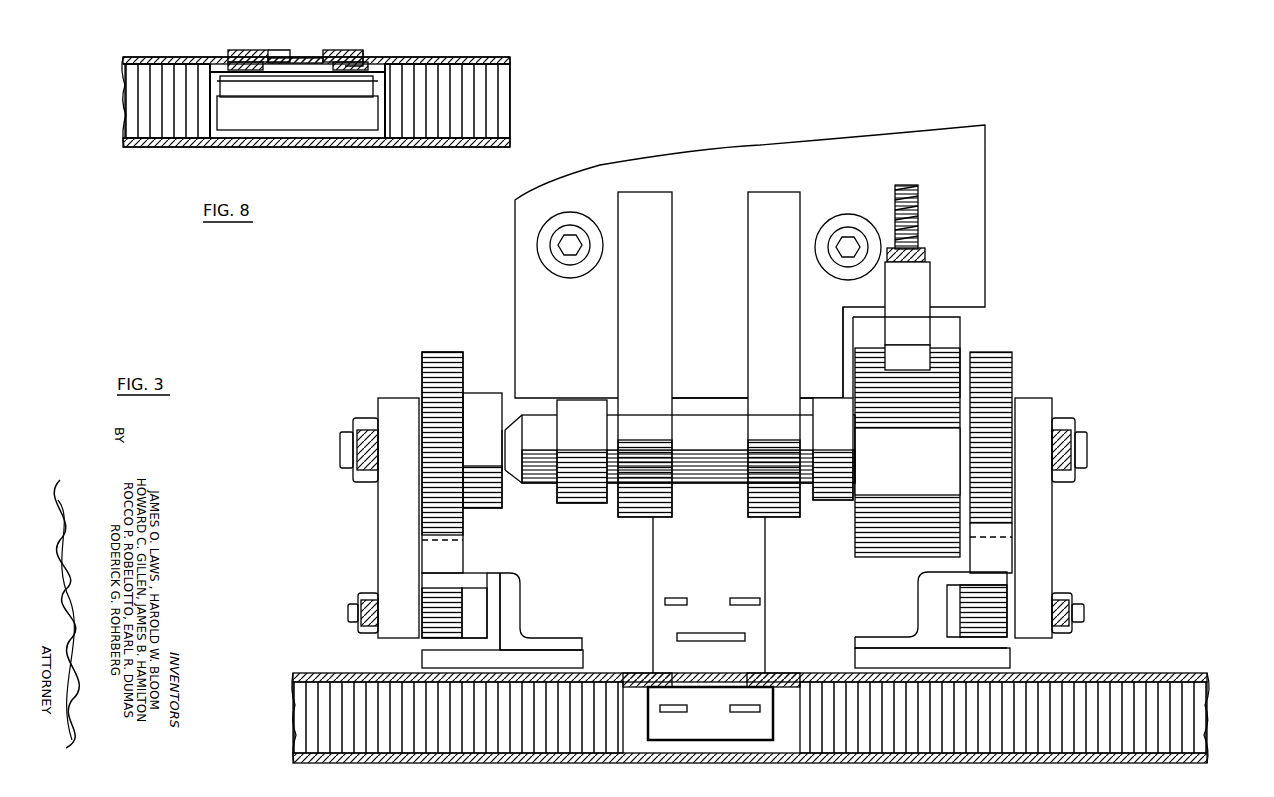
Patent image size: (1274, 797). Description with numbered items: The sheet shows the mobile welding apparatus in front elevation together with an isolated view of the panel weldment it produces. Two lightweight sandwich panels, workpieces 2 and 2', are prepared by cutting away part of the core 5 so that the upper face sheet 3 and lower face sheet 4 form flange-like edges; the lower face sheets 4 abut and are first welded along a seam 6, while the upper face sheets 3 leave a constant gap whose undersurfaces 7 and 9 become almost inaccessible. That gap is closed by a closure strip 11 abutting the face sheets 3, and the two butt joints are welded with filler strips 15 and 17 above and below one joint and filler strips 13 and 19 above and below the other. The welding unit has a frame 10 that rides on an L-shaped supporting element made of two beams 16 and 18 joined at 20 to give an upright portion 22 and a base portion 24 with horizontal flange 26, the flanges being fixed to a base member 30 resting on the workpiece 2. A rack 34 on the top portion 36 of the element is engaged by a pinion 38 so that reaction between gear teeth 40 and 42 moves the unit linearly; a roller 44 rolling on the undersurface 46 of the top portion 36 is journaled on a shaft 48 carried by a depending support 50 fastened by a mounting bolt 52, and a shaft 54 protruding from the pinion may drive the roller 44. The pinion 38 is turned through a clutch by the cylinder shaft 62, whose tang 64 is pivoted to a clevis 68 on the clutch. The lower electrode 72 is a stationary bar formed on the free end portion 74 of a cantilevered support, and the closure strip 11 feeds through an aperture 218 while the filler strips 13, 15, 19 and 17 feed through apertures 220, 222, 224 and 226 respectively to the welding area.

In FIG. 8, the workpiece 2 is at (290, 102).
In FIG. 3, the workpiece 2 is at (750, 701).
In FIG. 8, the workpiece 2' is at (536, 46).
In FIG. 8, the upper face sheet 3 is at (128, 57).
In FIG. 3, the upper face sheet 3 is at (1170, 672).
In FIG. 3, the lower face sheet 4 is at (1208, 758).
In FIG. 8, the core 5 is at (317, 101).
In FIG. 3, the core 5 is at (1200, 713).
In FIG. 3, the seam 6 is at (705, 757).
In FIG. 3, the undersurface of upper face sheet 7 is at (638, 688).
In FIG. 3, the undersurface of upper face sheet 9 is at (783, 688).
In FIG. 3, the frame 10 is at (518, 215).
In FIG. 8, the closure strip 11 is at (310, 58).
In FIG. 8, the filler strip 13 is at (360, 52).
In FIG. 8, the filler strip 15 is at (248, 54).
In FIG. 8, the filler strip 17 is at (228, 60).
In FIG. 8, the filler strip 19 is at (370, 60).
In FIG. 3, the beam 16 is at (497, 582).
In FIG. 3, the beam 18 is at (507, 586).
In FIG. 3, the joint between beams 20 is at (503, 612).
In FIG. 3, the upright portion 22 is at (520, 632).
In FIG. 3, the base portion 24 is at (860, 645).
In FIG. 3, the horizontal flange 26 is at (430, 645).
In FIG. 3, the base member 30 is at (860, 657).
In FIG. 3, the rack 34 is at (455, 548).
In FIG. 3, the top portion 36 is at (455, 582).
In FIG. 3, the pinion 38 is at (422, 368).
In FIG. 3, the gear teeth 40 is at (420, 543).
In FIG. 3, the gear teeth 42 is at (440, 358).
In FIG. 3, the roller 44 is at (445, 602).
In FIG. 3, the undersurface 46 is at (474, 613).
In FIG. 3, the shaft 48 is at (355, 607).
In FIG. 3, the depending support 50 is at (392, 508).
In FIG. 3, the mounting bolt 52 is at (358, 422).
In FIG. 3, the shaft 54 is at (345, 455).
In FIG. 3, the shaft 62 is at (918, 213).
In FIG. 3, the tang 64 is at (907, 296).
In FIG. 3, the clevis 68 is at (960, 340).
In FIG. 8, the lower electrode 72 is at (250, 86).
In FIG. 8, the end portion 74 is at (345, 118).
In FIG. 3, the aperture 218 is at (740, 634).
In FIG. 3, the aperture 220 is at (675, 598).
In FIG. 3, the aperture 222 is at (750, 598).
In FIG. 3, the aperture 224 is at (676, 712).
In FIG. 3, the aperture 226 is at (745, 712).